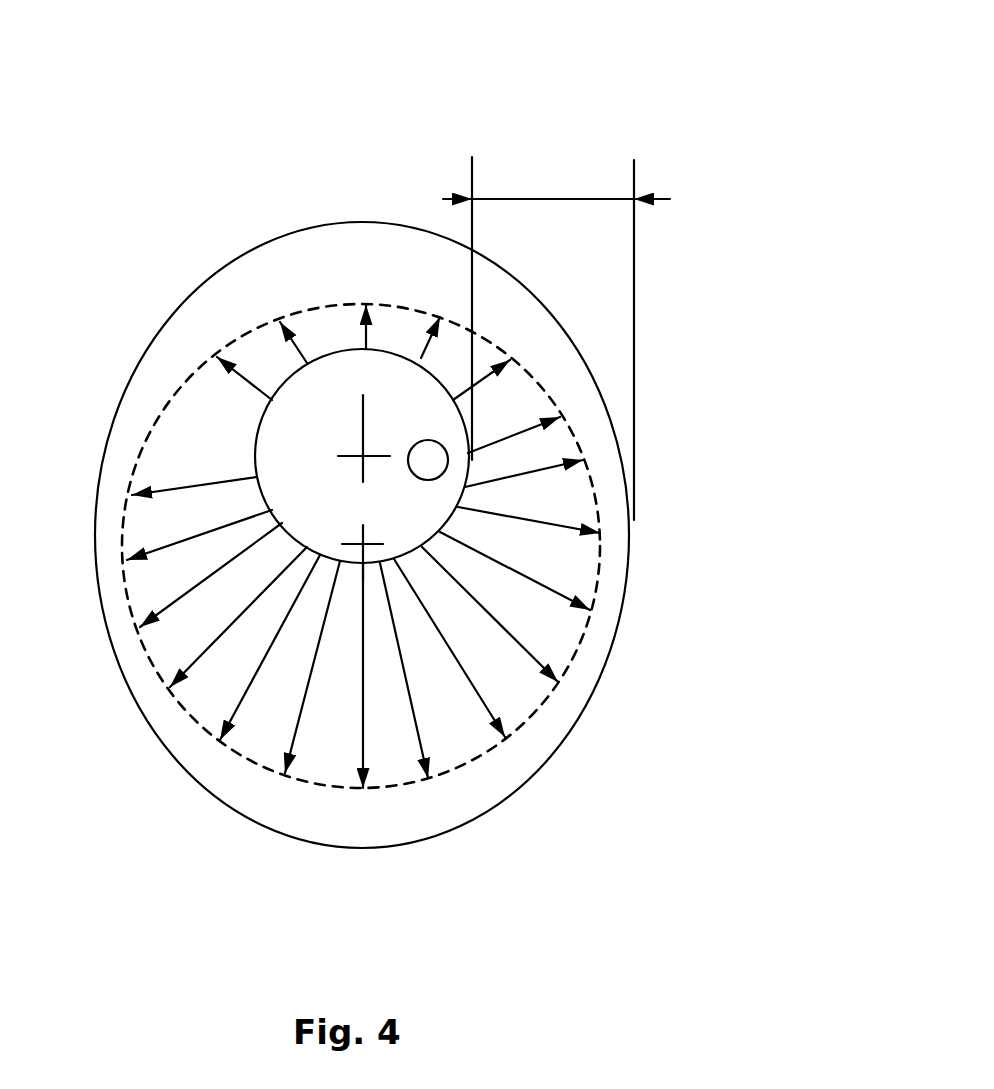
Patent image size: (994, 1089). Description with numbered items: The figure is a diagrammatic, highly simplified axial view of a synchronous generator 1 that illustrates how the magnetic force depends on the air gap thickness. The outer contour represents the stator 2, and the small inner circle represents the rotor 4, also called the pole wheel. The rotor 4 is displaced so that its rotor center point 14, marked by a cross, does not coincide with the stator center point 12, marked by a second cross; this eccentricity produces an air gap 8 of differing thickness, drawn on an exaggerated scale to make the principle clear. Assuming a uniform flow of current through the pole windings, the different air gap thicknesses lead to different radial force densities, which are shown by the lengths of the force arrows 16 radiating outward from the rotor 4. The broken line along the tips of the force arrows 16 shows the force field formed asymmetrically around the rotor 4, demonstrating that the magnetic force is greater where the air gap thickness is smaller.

The synchronous generator 1 is at (514, 94).
The stator 2 is at (280, 221).
The rotor 4 is at (428, 460).
The air gap 8 is at (553, 728).
The stator center point 12 is at (363, 544).
The rotor center point 14 is at (363, 456).
The force arrows 16 is at (292, 333).